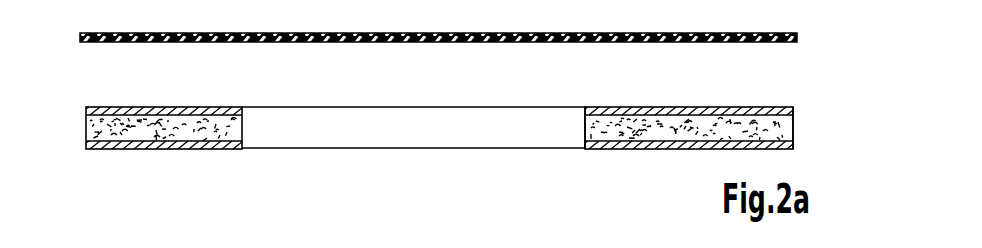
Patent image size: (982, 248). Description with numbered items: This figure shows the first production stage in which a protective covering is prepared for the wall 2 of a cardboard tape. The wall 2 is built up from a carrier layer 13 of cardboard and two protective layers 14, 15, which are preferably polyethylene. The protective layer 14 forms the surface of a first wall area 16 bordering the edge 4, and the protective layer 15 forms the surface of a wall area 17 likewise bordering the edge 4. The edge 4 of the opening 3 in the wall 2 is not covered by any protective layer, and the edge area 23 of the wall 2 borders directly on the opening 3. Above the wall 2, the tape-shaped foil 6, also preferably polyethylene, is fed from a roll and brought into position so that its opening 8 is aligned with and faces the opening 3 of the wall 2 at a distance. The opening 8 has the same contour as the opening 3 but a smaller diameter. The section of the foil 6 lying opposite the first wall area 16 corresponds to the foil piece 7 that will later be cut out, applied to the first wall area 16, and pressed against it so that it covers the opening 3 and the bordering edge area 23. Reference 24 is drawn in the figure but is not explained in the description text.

The wall 2 is at (467, 114).
The opening 3 is at (413, 107).
The edge 4 is at (585, 125).
The tape-shaped foil 6 is at (438, 21).
The foil piece 7 is at (568, 35).
The opening 8 is at (420, 33).
The carrier layer 13 is at (793, 126).
The protective layer 14 is at (668, 110).
The protective layer 15 is at (658, 149).
The first wall area 16 is at (162, 102).
The wall area 17 is at (150, 155).
The edge area 23 is at (598, 107).
The lower joint 24 is at (590, 149).